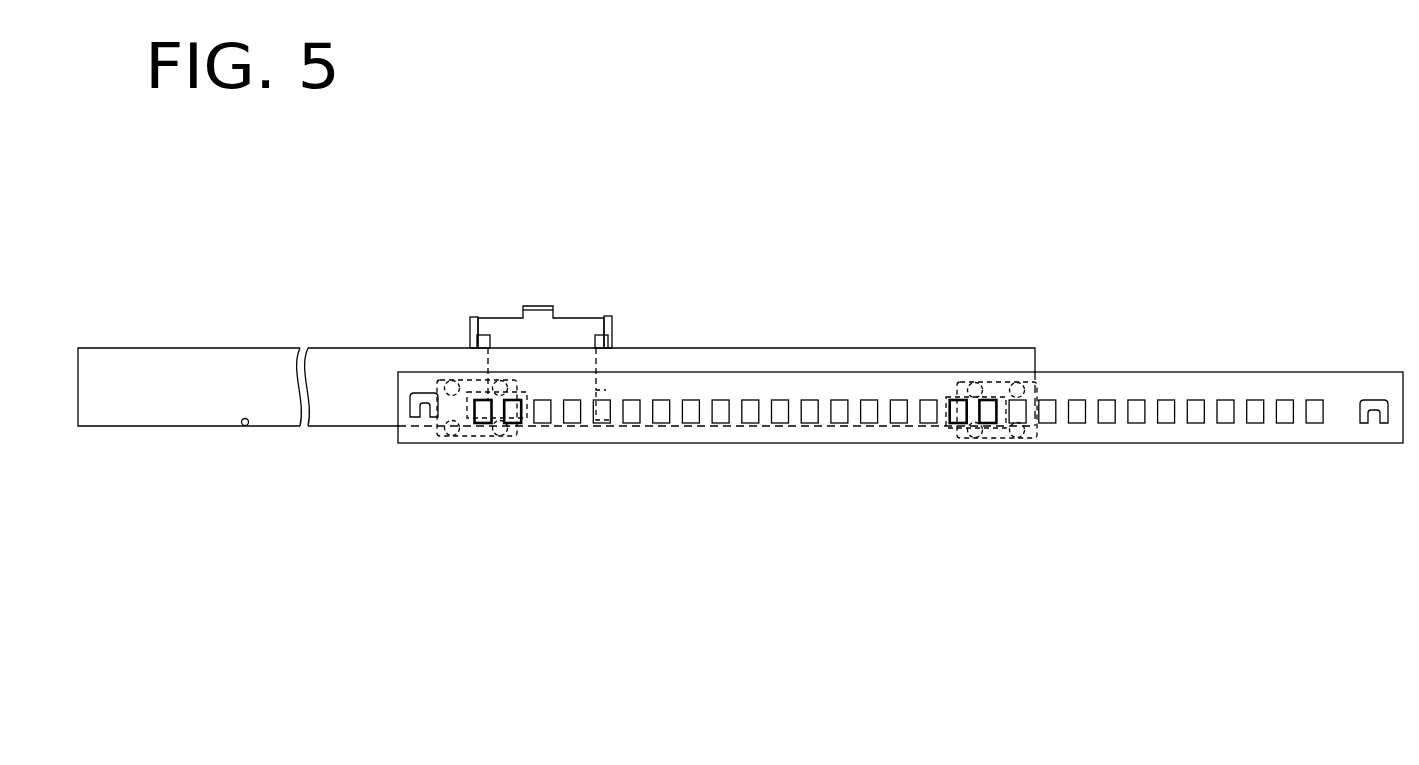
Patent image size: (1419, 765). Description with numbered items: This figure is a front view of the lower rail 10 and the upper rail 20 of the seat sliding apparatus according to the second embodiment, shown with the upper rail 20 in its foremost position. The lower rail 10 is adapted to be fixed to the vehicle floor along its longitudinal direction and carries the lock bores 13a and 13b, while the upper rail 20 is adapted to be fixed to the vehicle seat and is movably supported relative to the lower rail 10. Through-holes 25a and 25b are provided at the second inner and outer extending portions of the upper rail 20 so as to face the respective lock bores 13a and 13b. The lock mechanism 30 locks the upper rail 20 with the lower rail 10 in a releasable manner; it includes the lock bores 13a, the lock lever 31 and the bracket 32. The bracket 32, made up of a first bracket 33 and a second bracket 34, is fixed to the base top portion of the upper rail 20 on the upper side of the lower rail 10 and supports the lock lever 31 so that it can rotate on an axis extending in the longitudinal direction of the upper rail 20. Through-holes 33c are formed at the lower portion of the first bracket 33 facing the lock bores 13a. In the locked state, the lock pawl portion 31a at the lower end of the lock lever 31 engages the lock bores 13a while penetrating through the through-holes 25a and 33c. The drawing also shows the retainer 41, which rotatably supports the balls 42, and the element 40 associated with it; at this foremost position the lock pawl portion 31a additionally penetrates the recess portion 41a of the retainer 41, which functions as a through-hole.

The lower rail 10 is at (900, 447).
The lock bores 13a is at (716, 404).
The lock bores 13b is at (899, 453).
The upper rail 20 is at (332, 343).
The through-hole 25a is at (702, 476).
The through-hole 25b is at (604, 406).
The lock mechanism 30 is at (610, 392).
The lock lever 31 is at (560, 327).
The lock pawl portion 31a is at (573, 427).
The bracket 32 is at (657, 330).
The first bracket 33 is at (610, 337).
The through-holes 33c is at (603, 427).
The second bracket 34 is at (470, 345).
The holder 40 is at (744, 443).
The retainer 41 is at (457, 430).
The recess portion 41a is at (545, 427).
The balls 42 is at (497, 433).